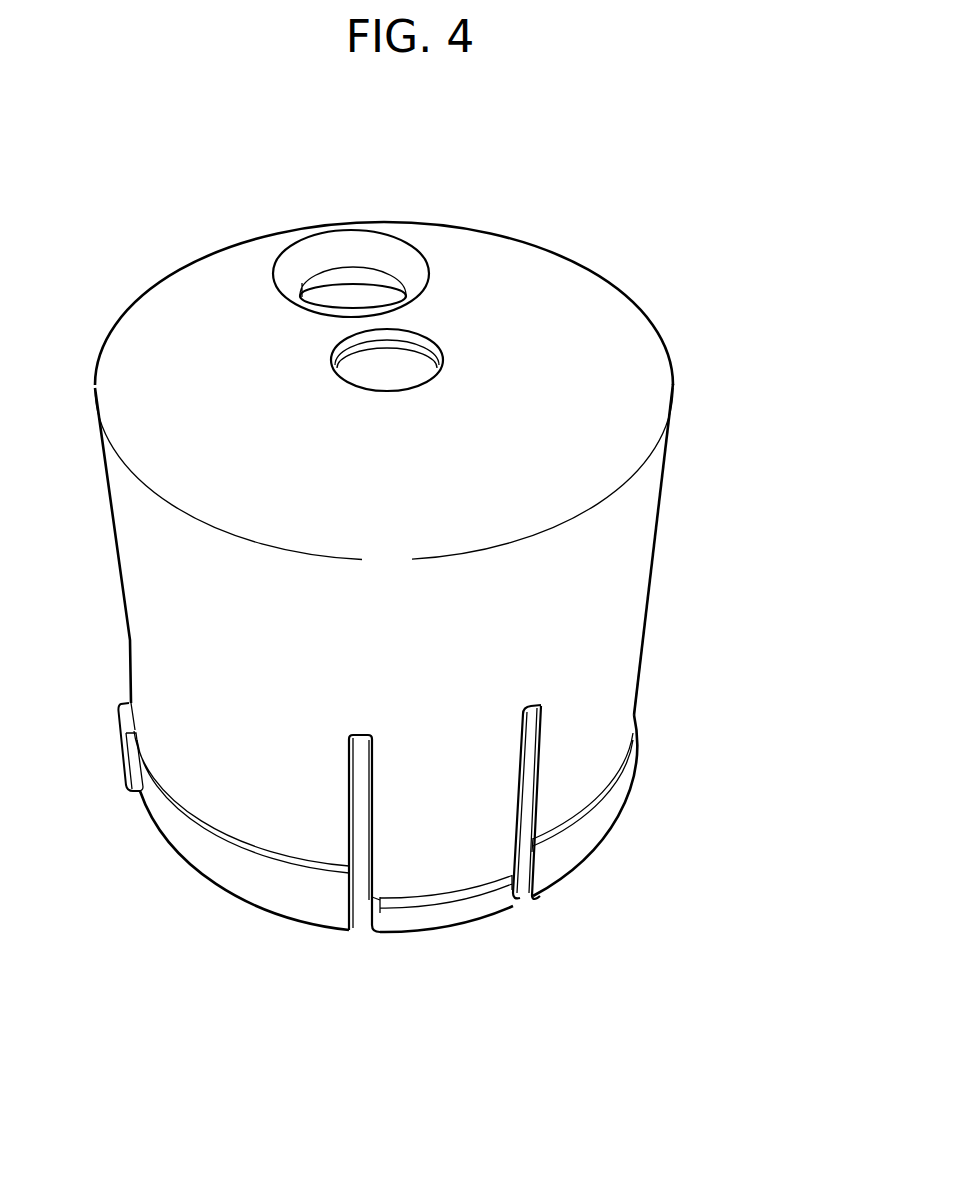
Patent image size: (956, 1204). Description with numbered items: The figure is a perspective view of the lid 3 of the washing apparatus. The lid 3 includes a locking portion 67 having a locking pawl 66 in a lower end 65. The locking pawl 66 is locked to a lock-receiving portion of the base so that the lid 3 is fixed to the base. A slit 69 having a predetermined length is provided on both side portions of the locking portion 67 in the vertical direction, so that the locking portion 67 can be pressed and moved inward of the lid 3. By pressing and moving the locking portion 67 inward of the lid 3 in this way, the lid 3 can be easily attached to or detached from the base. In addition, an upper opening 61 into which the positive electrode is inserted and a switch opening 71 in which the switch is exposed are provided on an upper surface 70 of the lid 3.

The lid 3 is at (630, 260).
The upper opening 61 is at (398, 368).
The upper surface 70 is at (610, 428).
The switch opening 71 is at (355, 295).
The lower end 65 is at (375, 930).
The locking pawl 66 is at (430, 920).
The locking portion 67 is at (473, 825).
The slit 69 is at (523, 772).